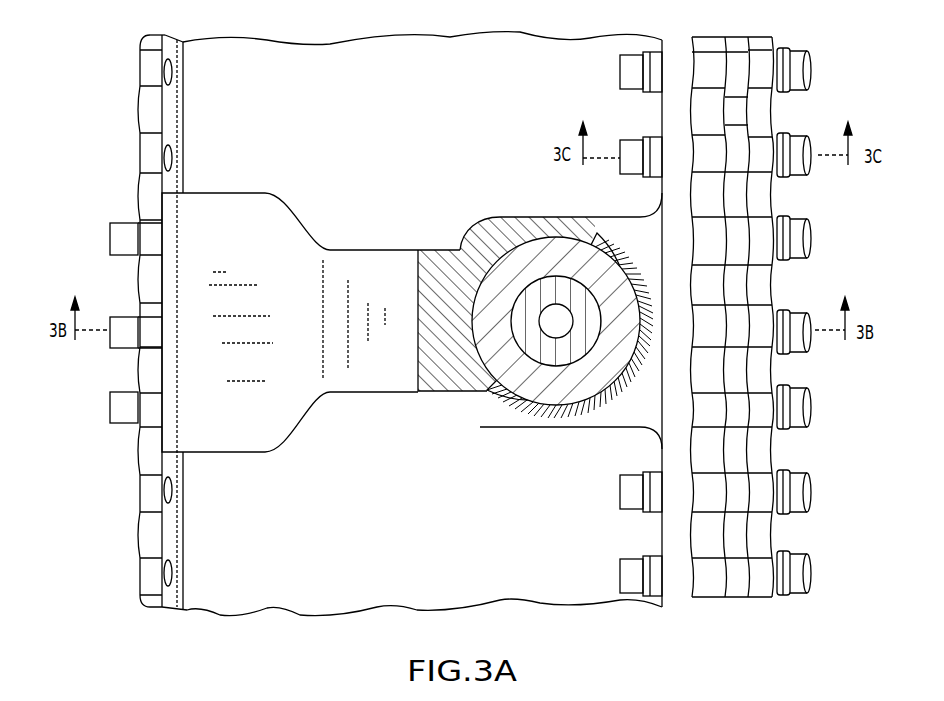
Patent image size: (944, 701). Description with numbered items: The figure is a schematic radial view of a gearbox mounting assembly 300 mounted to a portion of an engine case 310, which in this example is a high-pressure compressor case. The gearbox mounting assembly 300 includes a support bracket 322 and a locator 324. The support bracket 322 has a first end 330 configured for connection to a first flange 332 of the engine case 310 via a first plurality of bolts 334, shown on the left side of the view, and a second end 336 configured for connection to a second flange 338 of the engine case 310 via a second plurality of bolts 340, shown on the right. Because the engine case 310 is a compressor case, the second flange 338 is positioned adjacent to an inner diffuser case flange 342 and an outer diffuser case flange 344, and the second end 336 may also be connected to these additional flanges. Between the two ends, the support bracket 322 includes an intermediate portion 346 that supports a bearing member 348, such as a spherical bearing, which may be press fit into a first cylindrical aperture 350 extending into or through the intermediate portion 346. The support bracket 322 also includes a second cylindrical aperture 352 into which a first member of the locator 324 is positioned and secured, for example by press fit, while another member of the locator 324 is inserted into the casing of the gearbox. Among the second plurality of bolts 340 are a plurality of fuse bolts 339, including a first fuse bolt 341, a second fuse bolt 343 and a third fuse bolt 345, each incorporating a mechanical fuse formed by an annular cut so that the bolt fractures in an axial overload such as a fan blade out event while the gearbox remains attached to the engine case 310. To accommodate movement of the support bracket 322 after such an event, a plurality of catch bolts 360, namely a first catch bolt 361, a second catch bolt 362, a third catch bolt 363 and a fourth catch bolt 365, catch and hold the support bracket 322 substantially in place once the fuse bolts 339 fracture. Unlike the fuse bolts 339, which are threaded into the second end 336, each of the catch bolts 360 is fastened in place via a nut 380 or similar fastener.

The gearbox mounting assembly 300 is at (330, 153).
The engine case 310 is at (469, 88).
The support bracket 322 is at (290, 410).
The locator 324 is at (510, 307).
The first end 330 is at (170, 230).
The first flange 332 is at (148, 490).
The first plurality of bolts 334 is at (118, 407).
The second end 336 is at (657, 410).
The second flange 338 is at (707, 582).
The plurality of fuse bolts 339 is at (810, 250).
The second plurality of bolts 340 is at (800, 420).
The first fuse bolt 341 is at (807, 400).
The inner diffuser case flange 342 is at (737, 585).
The second fuse bolt 343 is at (792, 325).
The outer diffuser case flange 344 is at (760, 588).
The third fuse bolt 345 is at (807, 227).
The intermediate portion 346 is at (437, 380).
The bearing member 348 is at (537, 257).
The first cylindrical aperture 350 is at (507, 390).
The second cylindrical aperture 352 is at (533, 293).
The plurality of catch bolts 360 is at (800, 63).
The first catch bolt 361 is at (810, 72).
The second catch bolt 362 is at (797, 143).
The third catch bolt 363 is at (810, 488).
The fourth catch bolt 365 is at (808, 573).
The nut 380 is at (647, 578).